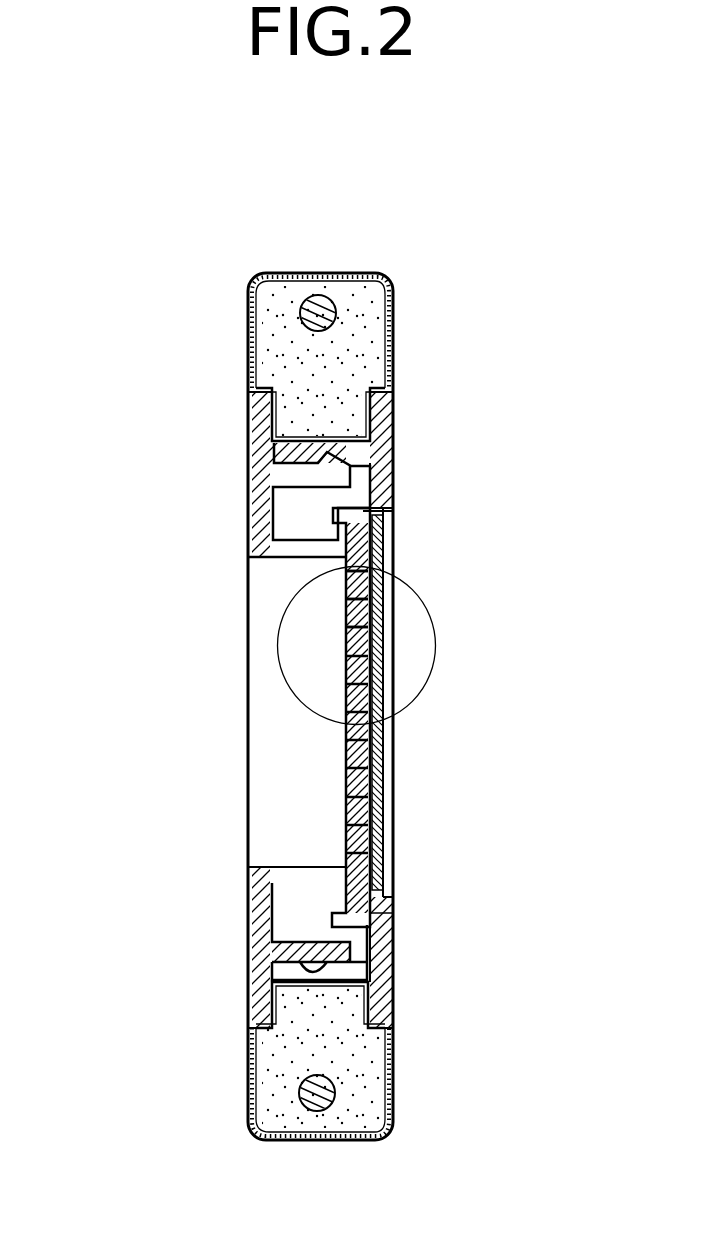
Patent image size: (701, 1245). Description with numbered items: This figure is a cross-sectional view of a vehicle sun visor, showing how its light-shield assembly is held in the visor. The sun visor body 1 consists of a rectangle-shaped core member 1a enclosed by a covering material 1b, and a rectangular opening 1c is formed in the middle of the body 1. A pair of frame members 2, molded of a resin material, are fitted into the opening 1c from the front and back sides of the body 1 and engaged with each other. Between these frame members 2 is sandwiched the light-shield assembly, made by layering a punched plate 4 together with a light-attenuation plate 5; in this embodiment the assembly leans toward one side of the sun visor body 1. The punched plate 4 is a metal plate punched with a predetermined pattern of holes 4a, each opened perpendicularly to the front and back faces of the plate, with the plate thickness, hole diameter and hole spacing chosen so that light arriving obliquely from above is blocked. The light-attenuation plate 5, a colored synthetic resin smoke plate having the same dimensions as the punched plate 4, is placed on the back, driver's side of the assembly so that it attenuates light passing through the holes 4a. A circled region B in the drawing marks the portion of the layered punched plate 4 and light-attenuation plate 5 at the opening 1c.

The sun visor body 1 is at (553, 200).
The core member 1a is at (352, 314).
The covering material 1b is at (395, 362).
The opening 1c is at (263, 735).
The frame members 2 is at (275, 500).
The punched plate 4 is at (343, 808).
The holes 4a is at (375, 648).
The light-attenuation plate 5 is at (383, 755).
The region B is at (277, 633).